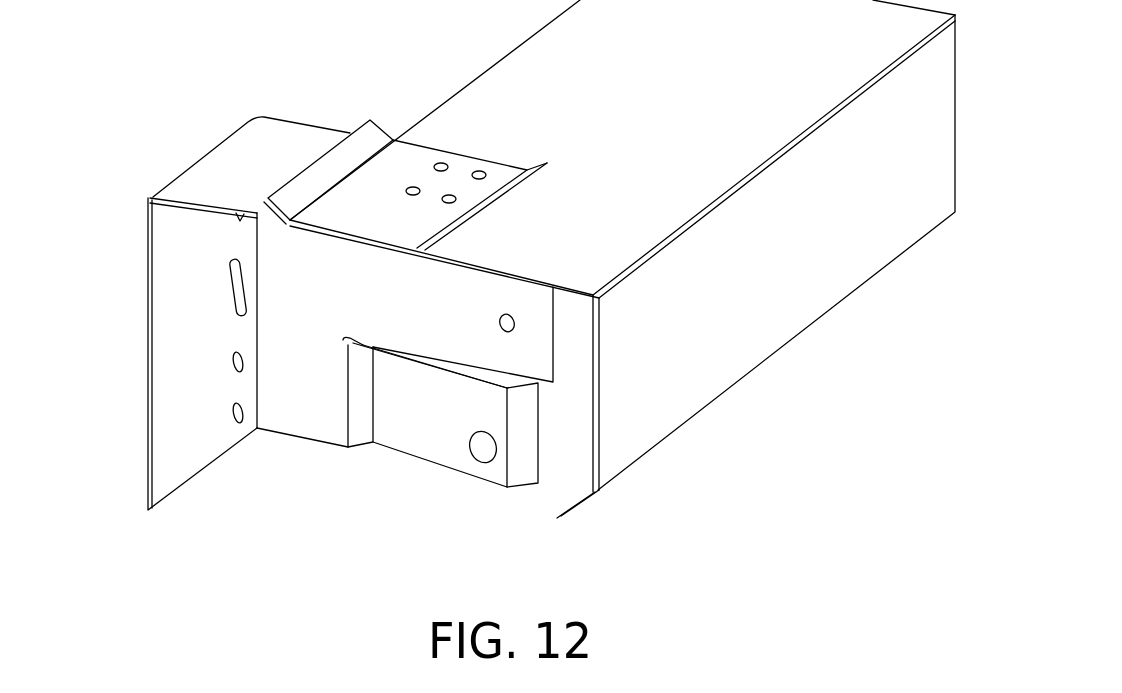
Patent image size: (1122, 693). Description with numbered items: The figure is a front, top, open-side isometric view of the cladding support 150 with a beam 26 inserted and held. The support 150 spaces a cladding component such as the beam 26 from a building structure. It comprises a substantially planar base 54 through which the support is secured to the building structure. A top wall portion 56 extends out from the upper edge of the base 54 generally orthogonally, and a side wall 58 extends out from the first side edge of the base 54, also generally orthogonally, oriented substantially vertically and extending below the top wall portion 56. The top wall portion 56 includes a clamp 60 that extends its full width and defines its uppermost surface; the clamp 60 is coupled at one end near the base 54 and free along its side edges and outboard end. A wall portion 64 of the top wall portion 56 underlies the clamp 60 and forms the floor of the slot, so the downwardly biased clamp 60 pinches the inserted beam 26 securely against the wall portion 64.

The beam 26 is at (740, 345).
The base 54 is at (180, 392).
The top wall portion 56 is at (247, 158).
The side wall 58 is at (317, 413).
The clamp 60 is at (313, 138).
The wall portion 64 is at (273, 220).
The cladding support 150 is at (297, 286).